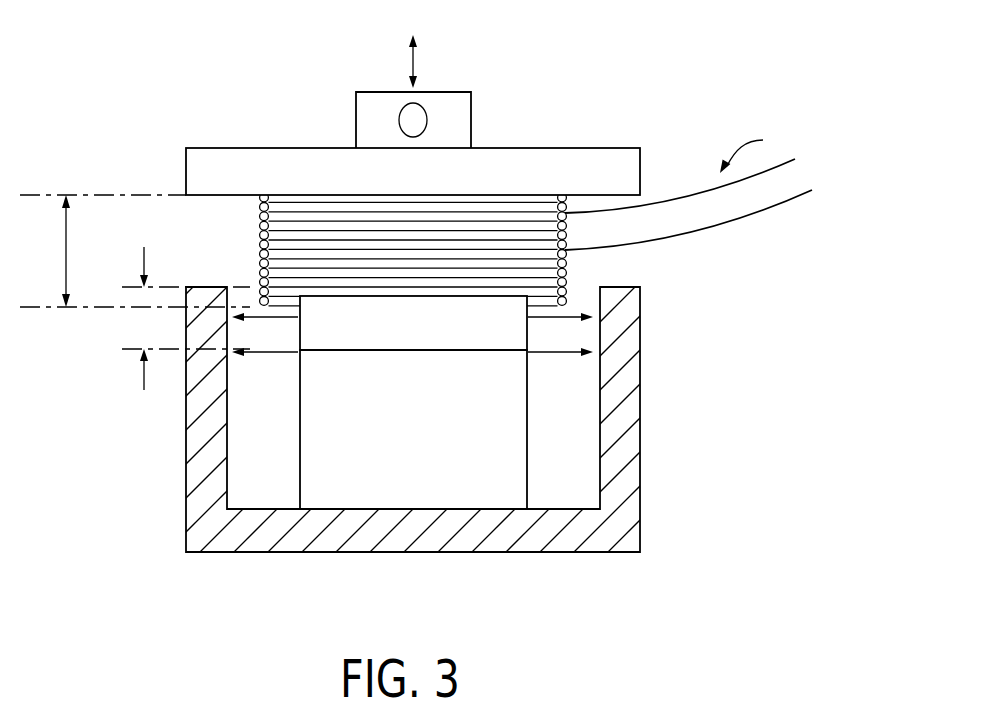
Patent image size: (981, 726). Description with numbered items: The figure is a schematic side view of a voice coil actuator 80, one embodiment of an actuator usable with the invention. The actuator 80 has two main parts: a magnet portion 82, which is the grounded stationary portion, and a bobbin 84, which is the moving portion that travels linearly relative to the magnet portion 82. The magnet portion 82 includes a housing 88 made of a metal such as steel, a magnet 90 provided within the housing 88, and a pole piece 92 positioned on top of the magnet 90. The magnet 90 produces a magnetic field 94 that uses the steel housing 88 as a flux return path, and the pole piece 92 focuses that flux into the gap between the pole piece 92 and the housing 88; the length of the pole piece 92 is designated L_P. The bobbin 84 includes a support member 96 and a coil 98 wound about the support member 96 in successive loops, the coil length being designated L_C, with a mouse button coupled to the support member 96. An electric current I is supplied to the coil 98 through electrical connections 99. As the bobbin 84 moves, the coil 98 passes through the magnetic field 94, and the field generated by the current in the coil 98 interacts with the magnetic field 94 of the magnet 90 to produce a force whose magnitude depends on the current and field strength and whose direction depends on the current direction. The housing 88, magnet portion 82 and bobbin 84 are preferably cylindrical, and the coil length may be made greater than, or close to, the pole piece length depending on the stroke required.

The voice coil actuator 80 is at (122, 66).
The magnet portion 82 is at (678, 438).
The bobbin 84 is at (648, 131).
The housing 88 is at (557, 540).
The magnet 90 is at (505, 462).
The pole piece 92 is at (322, 347).
The magnetic field 94 is at (272, 313).
The support member 96 is at (363, 130).
The coil 98 is at (247, 229).
The electrical connections 99 is at (755, 218).